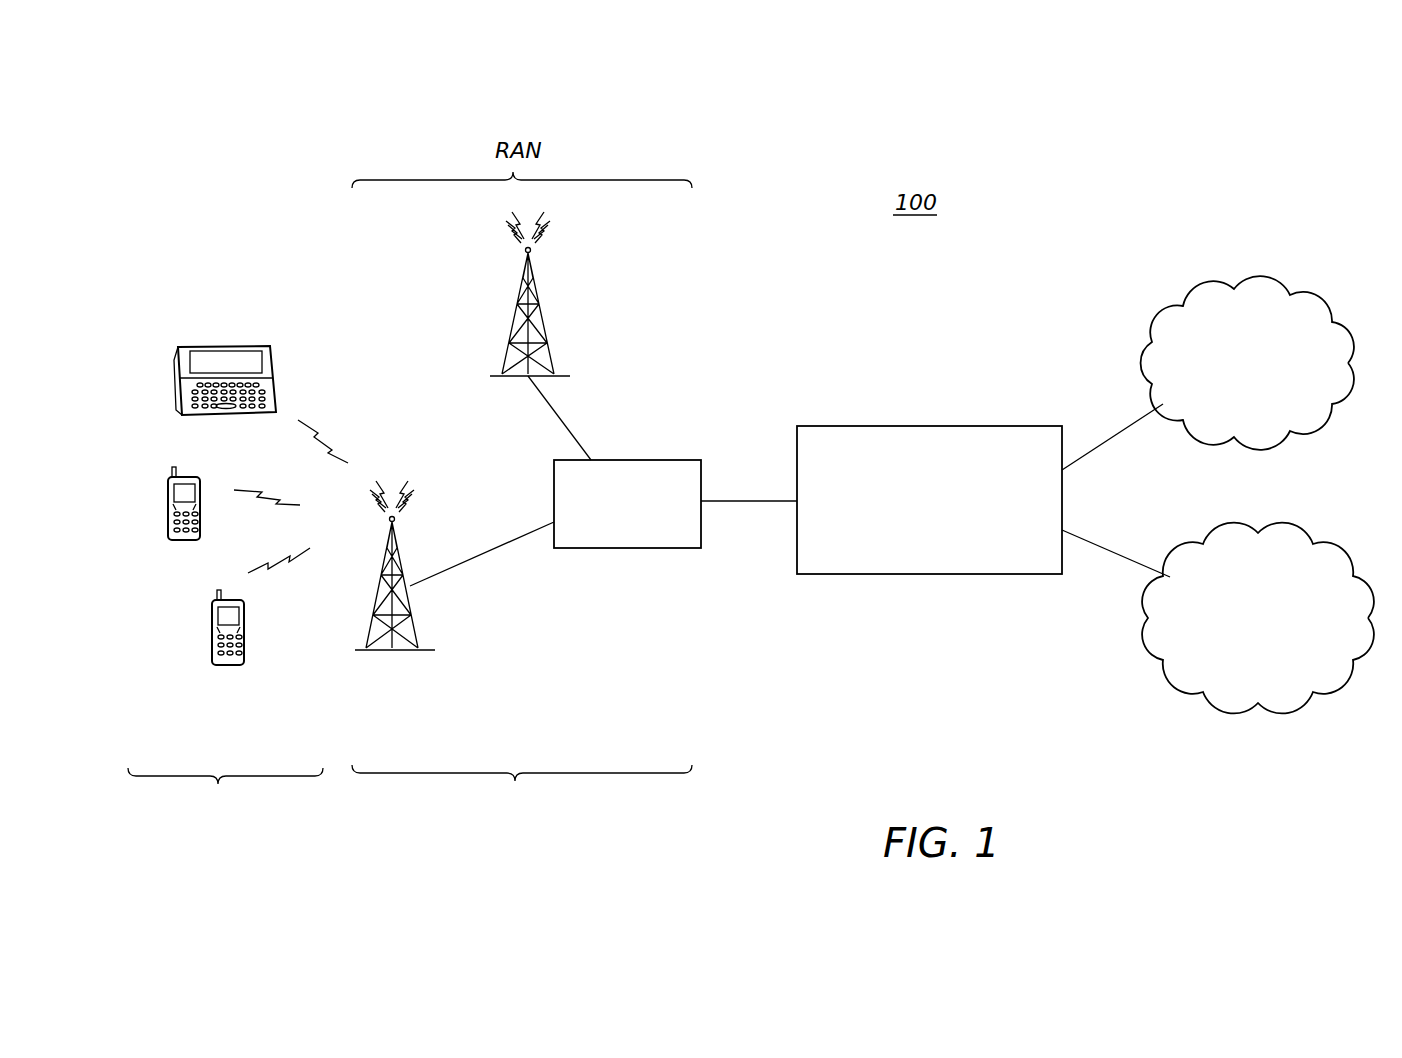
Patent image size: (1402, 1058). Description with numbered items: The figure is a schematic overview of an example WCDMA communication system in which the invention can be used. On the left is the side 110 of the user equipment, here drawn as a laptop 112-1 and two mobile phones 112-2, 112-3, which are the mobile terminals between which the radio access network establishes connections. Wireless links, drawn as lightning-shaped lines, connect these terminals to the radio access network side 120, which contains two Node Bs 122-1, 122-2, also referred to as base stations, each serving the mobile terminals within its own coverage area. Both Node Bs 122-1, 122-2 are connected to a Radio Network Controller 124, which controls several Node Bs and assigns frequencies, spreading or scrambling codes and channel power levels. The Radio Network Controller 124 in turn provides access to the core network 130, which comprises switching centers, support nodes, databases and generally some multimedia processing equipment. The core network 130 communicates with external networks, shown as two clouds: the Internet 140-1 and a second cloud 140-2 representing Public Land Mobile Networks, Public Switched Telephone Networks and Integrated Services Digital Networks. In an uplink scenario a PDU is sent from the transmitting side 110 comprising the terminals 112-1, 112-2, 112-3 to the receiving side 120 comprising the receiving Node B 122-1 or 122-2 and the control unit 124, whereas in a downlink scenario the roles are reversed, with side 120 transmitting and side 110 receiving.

The transmitting side 110 is at (225, 793).
The user equipment 112-1 is at (245, 345).
The user equipment 112-2 is at (178, 540).
The user equipment 112-3 is at (222, 665).
The receiving side 120 is at (522, 792).
The Node B 122-1 is at (512, 324).
The Node B 122-2 is at (408, 650).
The Radio Network Controller 124 is at (610, 548).
The core network 130 is at (933, 426).
The external network 140-1 is at (1340, 286).
The external network 140-2 is at (1330, 550).